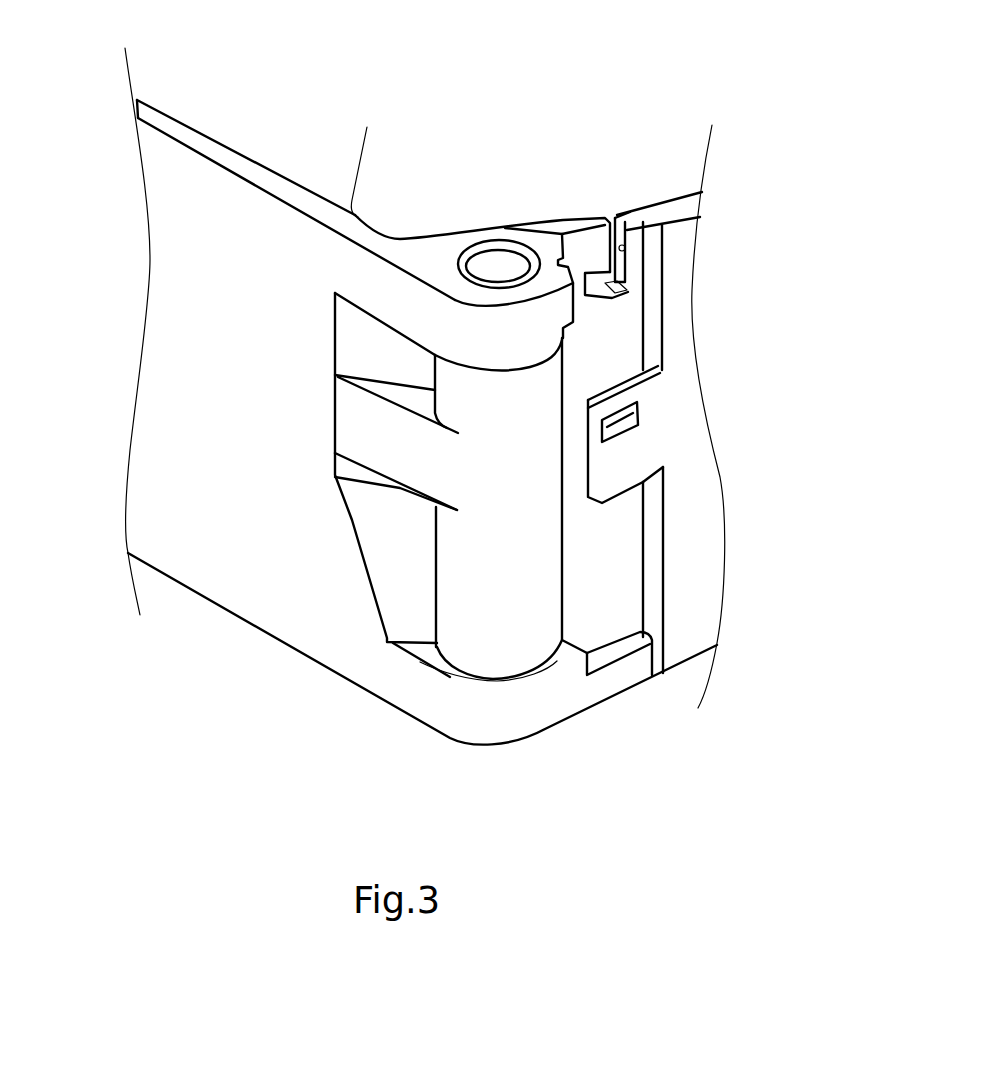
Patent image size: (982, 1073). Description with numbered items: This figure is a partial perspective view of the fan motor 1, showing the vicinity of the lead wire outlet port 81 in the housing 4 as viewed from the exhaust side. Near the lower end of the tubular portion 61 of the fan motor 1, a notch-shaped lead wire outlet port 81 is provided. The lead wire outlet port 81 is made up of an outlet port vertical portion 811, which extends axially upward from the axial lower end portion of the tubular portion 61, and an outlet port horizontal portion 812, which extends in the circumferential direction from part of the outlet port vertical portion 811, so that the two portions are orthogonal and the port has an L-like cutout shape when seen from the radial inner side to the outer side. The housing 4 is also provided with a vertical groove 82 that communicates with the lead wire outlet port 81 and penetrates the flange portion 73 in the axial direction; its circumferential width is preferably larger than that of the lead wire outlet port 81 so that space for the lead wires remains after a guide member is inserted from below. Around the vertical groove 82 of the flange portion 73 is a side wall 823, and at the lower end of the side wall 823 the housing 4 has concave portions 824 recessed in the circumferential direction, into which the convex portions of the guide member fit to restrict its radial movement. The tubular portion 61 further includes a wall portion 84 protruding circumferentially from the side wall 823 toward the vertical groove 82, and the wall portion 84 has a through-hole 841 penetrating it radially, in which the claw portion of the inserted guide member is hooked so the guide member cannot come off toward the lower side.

The fan motor 1 is at (285, 85).
The housing 4 is at (228, 555).
The tubular portion 61 is at (377, 538).
The flange portion 73 is at (420, 257).
The lead wire outlet port 81 is at (788, 246).
The outlet port vertical portion 811 is at (625, 250).
The outlet port horizontal portion 812 is at (620, 299).
The vertical groove 82 is at (598, 614).
The side wall 823 is at (653, 338).
The concave portions 824 is at (659, 222).
The wall portion 84 is at (625, 452).
The through-hole 841 is at (636, 411).